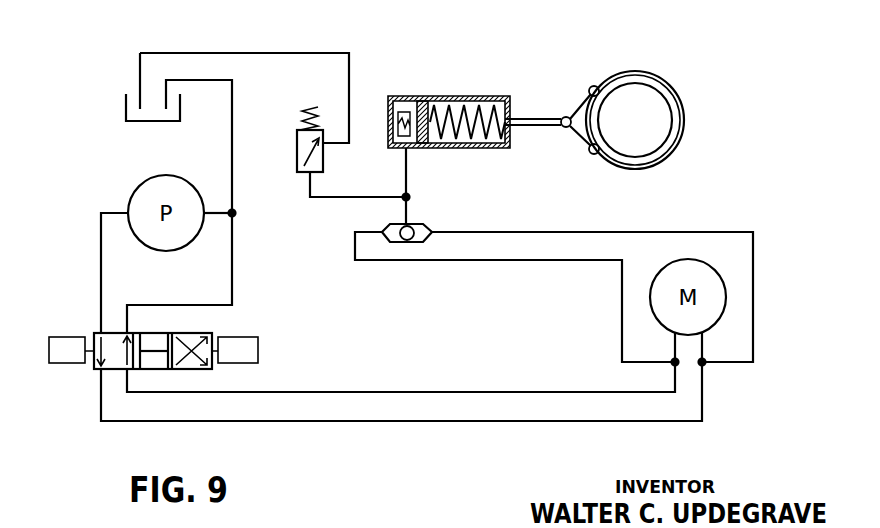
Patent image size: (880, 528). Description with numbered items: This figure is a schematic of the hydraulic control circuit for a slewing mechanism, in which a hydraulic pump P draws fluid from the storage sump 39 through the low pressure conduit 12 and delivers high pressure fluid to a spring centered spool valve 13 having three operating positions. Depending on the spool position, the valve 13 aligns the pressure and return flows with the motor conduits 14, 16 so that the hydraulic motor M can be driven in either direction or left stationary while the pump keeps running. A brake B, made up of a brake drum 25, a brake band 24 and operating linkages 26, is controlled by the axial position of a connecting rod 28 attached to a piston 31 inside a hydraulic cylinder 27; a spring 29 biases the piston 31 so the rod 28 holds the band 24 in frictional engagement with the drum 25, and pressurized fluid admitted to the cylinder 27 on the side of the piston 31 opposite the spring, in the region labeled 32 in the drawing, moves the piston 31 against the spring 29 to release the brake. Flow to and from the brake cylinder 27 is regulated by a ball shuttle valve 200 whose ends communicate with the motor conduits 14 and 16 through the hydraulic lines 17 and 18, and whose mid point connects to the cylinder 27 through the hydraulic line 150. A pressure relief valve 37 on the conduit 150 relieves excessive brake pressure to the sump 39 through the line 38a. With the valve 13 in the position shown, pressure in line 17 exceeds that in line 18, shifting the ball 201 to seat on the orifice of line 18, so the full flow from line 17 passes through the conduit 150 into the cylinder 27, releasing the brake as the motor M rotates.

The conduit 12 is at (232, 143).
The spring centered spool valve 13 is at (205, 332).
The motor conduit 14 is at (330, 421).
The motor conduit 16 is at (345, 391).
The hydraulic line 17 is at (755, 305).
The hydraulic line 18 is at (622, 314).
The brake band 24 is at (667, 84).
The brake drum 25 is at (653, 133).
The operating linkages 26 is at (580, 103).
The hydraulic cylinder 27 is at (446, 101).
The connecting rod 28 is at (538, 118).
The spring 29 is at (490, 140).
The piston 31 is at (424, 101).
The pressure chamber 32 is at (404, 112).
The pressure relief valve 37 is at (297, 151).
The line 38a is at (280, 53).
The storage sump 39 is at (126, 110).
The hydraulic line 150 is at (407, 175).
The ball shuttle valve 200 is at (433, 225).
The ball 201 is at (407, 242).